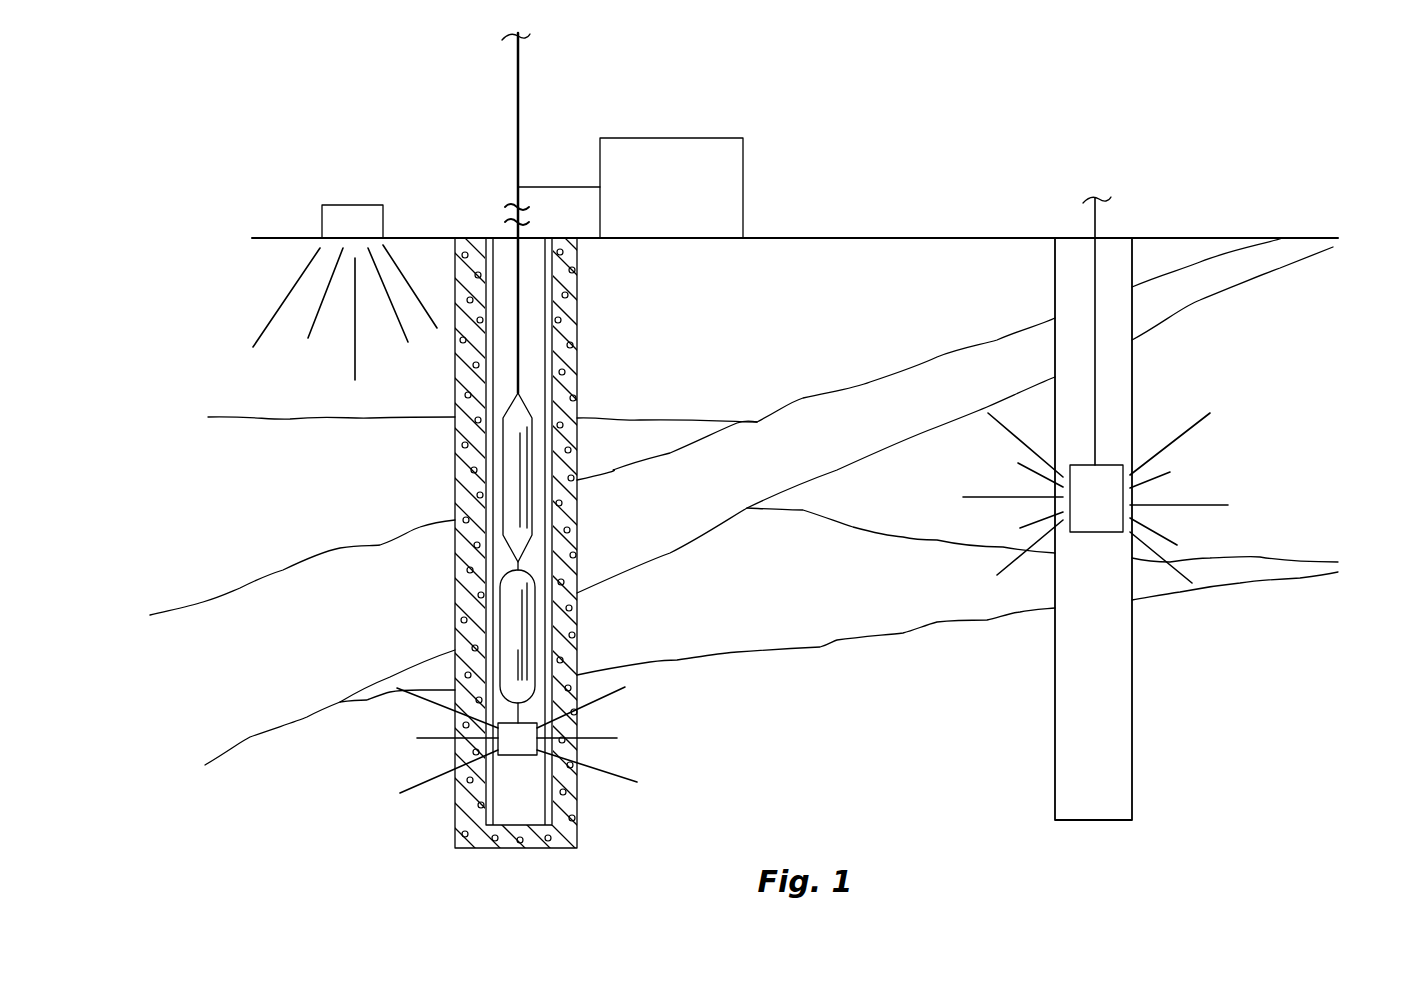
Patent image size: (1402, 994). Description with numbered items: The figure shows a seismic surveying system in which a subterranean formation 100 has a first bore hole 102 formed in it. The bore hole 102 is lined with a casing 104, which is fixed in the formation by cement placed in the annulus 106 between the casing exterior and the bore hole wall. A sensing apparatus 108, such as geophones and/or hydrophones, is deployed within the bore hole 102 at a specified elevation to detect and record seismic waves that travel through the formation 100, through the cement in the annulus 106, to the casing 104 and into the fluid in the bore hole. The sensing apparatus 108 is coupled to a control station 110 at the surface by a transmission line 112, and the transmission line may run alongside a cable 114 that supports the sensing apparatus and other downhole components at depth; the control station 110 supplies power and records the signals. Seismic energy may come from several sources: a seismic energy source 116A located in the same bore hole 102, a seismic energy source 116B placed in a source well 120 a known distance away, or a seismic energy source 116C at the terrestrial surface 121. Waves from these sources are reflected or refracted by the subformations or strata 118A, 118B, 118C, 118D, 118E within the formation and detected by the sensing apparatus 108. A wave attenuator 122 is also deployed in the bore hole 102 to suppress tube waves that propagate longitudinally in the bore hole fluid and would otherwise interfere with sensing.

The subterranean formation 100 is at (890, 270).
The first bore hole 102 is at (513, 779).
The casing 104 is at (503, 240).
The annulus 106 is at (577, 285).
The sensing apparatus 108 is at (503, 452).
The control station 110 is at (643, 138).
The transmission line 112 is at (522, 230).
The cable 114 is at (516, 127).
The seismic energy source 116A is at (537, 723).
The seismic energy source 116B is at (1110, 465).
The seismic energy source 116C is at (350, 205).
The strata 118A is at (800, 352).
The strata 118B is at (256, 522).
The strata 118C is at (633, 505).
The strata 118D is at (756, 602).
The strata 118E is at (757, 764).
The source well 120 is at (1093, 707).
The terrestrial surface 121 is at (1022, 238).
The wave attenuator 122 is at (500, 613).